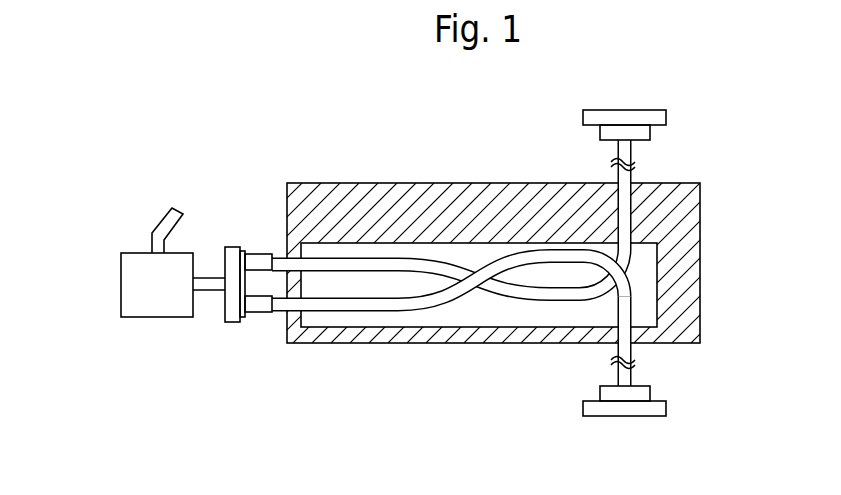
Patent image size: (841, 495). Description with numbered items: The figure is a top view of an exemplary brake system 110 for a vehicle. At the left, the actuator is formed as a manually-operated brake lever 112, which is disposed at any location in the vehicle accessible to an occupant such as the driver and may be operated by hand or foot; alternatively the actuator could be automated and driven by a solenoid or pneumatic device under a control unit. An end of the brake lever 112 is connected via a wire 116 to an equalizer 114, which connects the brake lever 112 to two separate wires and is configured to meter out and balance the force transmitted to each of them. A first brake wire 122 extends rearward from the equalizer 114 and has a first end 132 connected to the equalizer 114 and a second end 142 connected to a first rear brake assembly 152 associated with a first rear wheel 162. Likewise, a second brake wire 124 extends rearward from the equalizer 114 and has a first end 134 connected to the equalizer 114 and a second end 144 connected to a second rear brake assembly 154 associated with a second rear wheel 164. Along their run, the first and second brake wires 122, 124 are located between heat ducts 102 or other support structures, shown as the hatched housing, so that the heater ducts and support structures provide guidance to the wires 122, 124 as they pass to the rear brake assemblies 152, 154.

The heat ducts 102 is at (455, 202).
The brake system 110 is at (108, 285).
The brake lever 112 is at (172, 291).
The equalizer 114 is at (233, 247).
The wire 116 is at (213, 287).
The first brake wire 122 is at (397, 261).
The second brake wire 124 is at (527, 262).
The first end of first brake wire 132 is at (259, 250).
The first end of second brake wire 134 is at (260, 322).
The second end of first brake wire 142 is at (637, 211).
The second end of second brake wire 144 is at (637, 314).
The first rear brake assembly 152 is at (632, 132).
The second rear brake assembly 154 is at (633, 395).
The first rear wheel 162 is at (610, 117).
The second rear wheel 164 is at (610, 408).